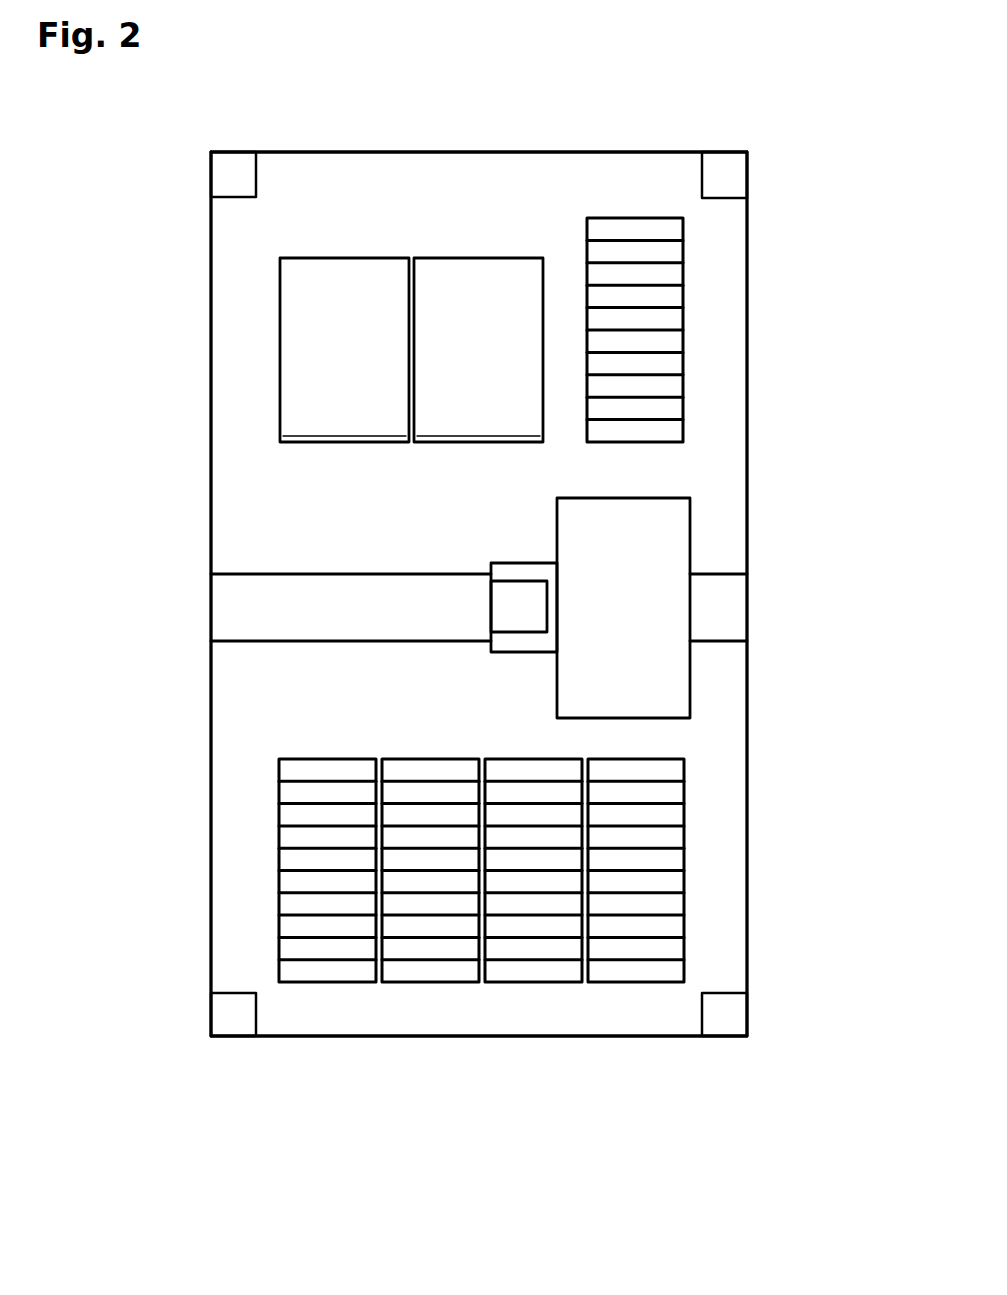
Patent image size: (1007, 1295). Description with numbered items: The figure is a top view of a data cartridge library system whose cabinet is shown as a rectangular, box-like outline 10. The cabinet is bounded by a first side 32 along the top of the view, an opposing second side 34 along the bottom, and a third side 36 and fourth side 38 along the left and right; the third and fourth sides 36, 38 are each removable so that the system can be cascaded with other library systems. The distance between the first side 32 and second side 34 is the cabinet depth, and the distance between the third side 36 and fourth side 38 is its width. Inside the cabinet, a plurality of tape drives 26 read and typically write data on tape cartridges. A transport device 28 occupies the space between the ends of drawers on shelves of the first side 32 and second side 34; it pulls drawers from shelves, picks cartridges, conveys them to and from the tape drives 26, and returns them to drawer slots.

The server computer chassis 10 is at (795, 330).
The tape drives 26 is at (252, 325).
The transport device 28 is at (729, 551).
The first side 32 is at (512, 143).
The second side 34 is at (452, 1042).
The third side 36 is at (193, 748).
The fourth side 38 is at (758, 425).